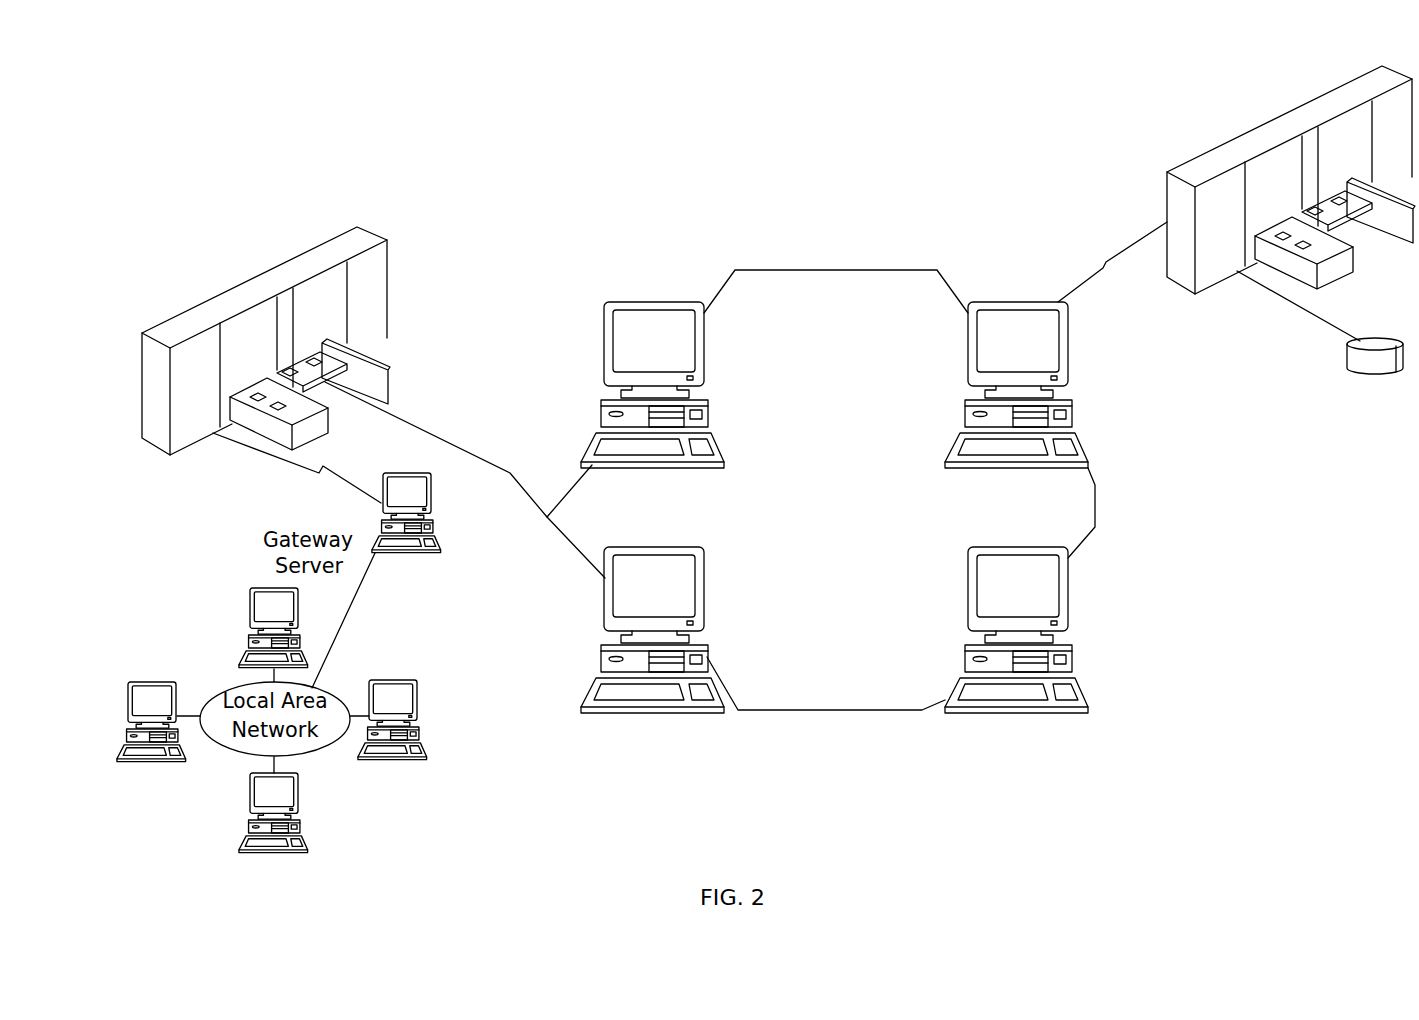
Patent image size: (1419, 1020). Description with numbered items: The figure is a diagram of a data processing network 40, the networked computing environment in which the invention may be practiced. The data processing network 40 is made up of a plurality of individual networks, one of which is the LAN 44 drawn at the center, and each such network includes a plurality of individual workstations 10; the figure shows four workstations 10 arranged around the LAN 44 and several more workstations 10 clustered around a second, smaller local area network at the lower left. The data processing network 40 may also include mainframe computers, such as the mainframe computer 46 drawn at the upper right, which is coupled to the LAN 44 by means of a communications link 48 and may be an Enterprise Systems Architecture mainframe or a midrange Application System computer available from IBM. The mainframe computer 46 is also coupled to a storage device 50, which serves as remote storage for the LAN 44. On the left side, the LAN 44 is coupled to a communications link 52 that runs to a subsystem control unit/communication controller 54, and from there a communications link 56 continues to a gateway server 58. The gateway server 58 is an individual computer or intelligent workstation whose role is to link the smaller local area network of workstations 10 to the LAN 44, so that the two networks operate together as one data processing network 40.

The workstation 10 is at (652, 302).
The data processing network 40 is at (880, 255).
The LAN 44 is at (821, 490).
The mainframe computer 46 is at (1240, 135).
The communications link 48 is at (1145, 238).
The storage device 50 is at (1383, 347).
The communications link 52 is at (428, 434).
The subsystem control unit/communication controller 54 is at (262, 274).
The communications link 56 is at (274, 456).
The gateway server 58 is at (433, 497).